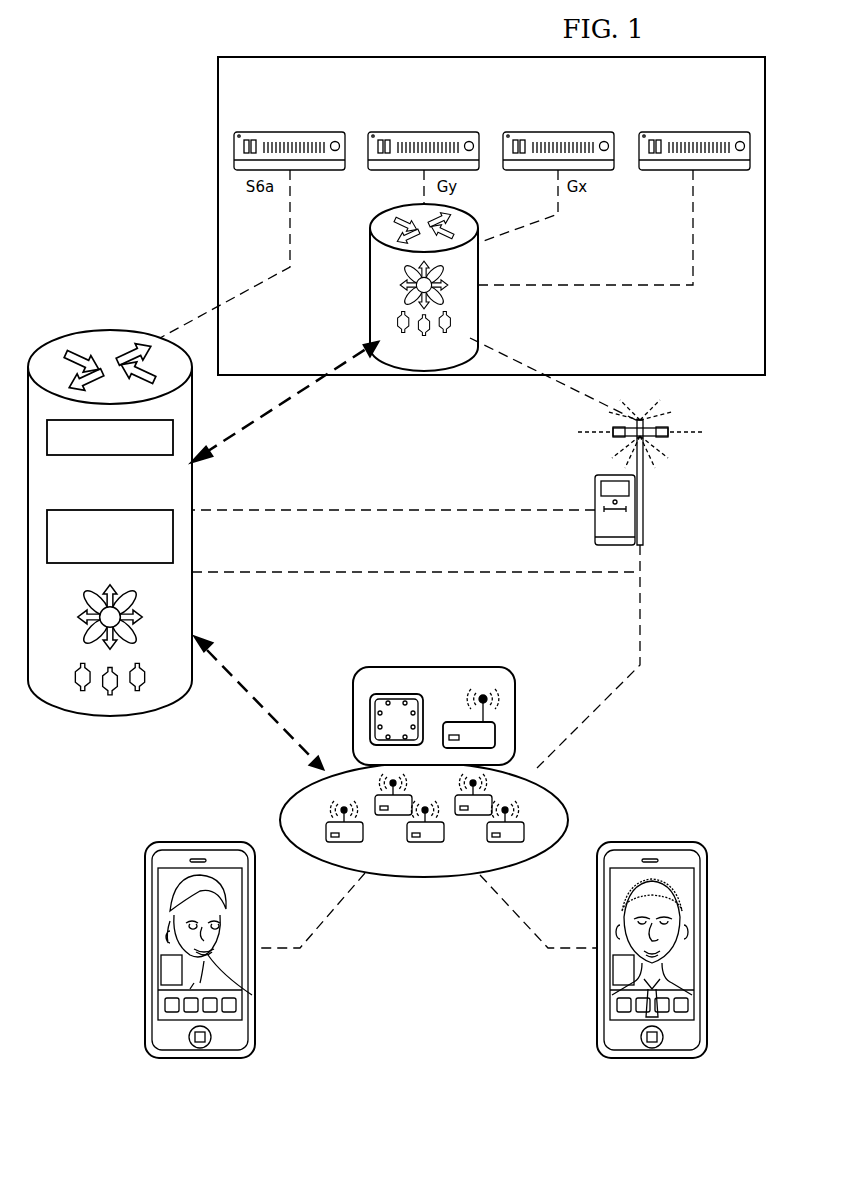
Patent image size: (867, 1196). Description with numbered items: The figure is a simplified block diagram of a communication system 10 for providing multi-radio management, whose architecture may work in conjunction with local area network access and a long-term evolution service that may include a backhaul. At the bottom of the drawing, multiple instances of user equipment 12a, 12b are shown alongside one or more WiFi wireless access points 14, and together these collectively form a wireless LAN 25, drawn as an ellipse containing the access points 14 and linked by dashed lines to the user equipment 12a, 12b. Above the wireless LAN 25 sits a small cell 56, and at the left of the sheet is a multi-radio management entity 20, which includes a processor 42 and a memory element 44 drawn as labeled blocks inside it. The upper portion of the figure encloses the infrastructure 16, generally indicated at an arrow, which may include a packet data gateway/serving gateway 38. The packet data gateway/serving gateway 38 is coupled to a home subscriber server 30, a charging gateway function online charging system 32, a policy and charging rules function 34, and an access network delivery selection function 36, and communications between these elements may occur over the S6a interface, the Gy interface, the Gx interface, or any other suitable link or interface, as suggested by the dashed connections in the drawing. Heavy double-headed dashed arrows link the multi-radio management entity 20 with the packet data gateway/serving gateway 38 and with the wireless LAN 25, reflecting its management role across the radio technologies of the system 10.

The communication system 10 is at (144, 46).
The user equipment 12a is at (145, 950).
The user equipment 12b is at (707, 950).
The WiFi wireless access point 14 is at (424, 842).
The infrastructure 16 is at (214, 185).
The multi-radio management entity 20 is at (110, 487).
The wireless LAN 25 is at (282, 815).
The home subscriber server 30 is at (280, 132).
The charging gateway function online charging system 32 is at (415, 132).
The policy and charging rules function 34 is at (569, 132).
The access network delivery selection function 36 is at (704, 132).
The packet data gateway/serving gateway 38 is at (370, 282).
The processor 42 is at (95, 456).
The memory element 44 is at (129, 510).
The small cell 56 is at (437, 667).